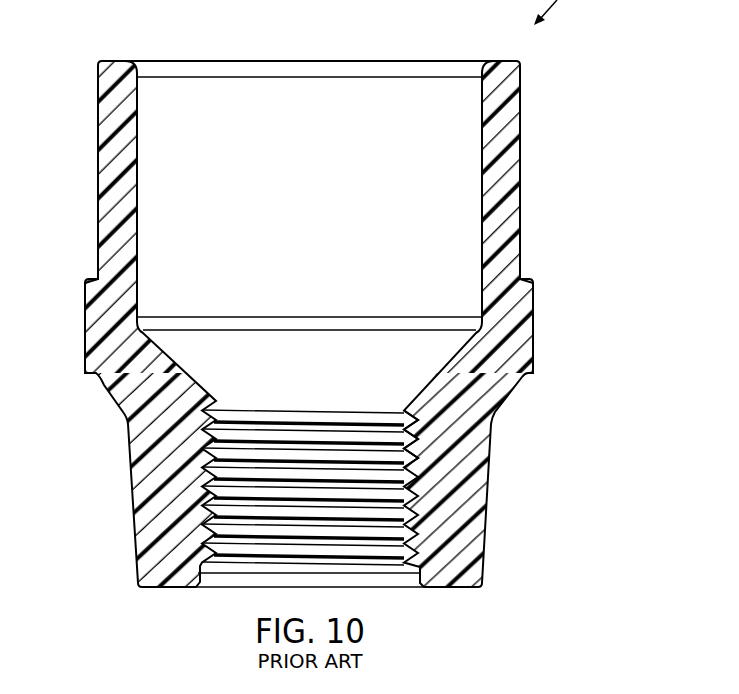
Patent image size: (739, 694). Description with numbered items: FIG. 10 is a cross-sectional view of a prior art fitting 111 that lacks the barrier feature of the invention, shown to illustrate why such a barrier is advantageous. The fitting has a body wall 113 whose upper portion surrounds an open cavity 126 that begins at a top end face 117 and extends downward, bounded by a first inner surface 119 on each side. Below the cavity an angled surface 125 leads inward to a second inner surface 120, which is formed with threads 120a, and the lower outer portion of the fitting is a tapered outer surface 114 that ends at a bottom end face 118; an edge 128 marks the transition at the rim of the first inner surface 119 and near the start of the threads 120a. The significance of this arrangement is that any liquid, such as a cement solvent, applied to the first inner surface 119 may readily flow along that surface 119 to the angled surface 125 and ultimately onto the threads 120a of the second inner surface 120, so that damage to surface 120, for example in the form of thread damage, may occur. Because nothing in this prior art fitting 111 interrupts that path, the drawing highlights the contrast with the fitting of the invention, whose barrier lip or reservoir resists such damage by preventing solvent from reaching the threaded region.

The prior art fitting 111 is at (498, 464).
The body wall 113 is at (522, 195).
The tapered outer surface 114 is at (490, 542).
The top end face 117 is at (379, 78).
The bottom end face 118 is at (241, 578).
The first inner surface 119 is at (138, 244).
The second inner surface 120 is at (412, 507).
The threads 120a is at (410, 446).
The angled surface 125 is at (458, 360).
The cavity 126 is at (263, 109).
The edge 128 is at (138, 142).